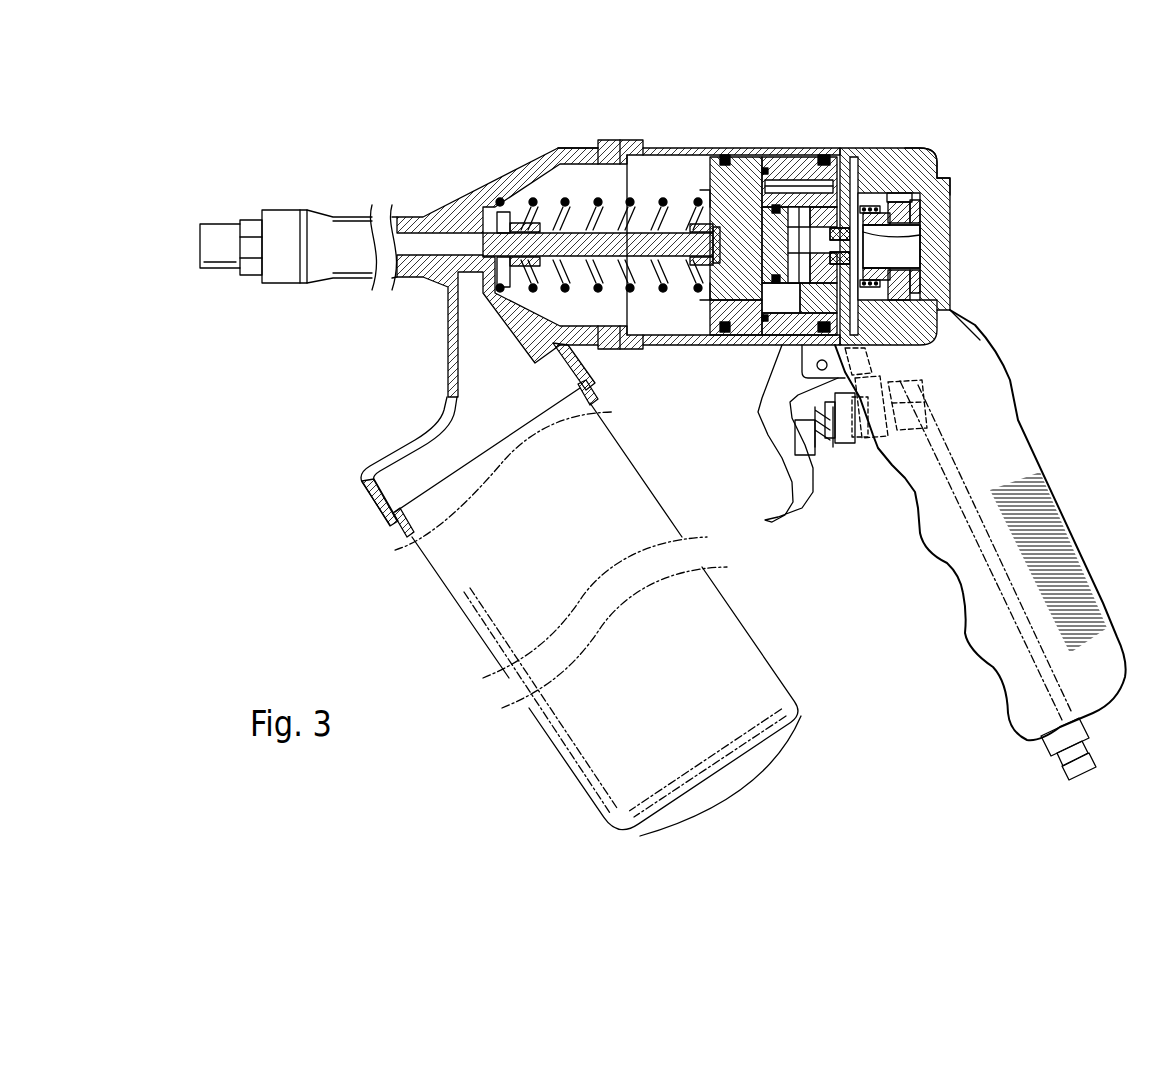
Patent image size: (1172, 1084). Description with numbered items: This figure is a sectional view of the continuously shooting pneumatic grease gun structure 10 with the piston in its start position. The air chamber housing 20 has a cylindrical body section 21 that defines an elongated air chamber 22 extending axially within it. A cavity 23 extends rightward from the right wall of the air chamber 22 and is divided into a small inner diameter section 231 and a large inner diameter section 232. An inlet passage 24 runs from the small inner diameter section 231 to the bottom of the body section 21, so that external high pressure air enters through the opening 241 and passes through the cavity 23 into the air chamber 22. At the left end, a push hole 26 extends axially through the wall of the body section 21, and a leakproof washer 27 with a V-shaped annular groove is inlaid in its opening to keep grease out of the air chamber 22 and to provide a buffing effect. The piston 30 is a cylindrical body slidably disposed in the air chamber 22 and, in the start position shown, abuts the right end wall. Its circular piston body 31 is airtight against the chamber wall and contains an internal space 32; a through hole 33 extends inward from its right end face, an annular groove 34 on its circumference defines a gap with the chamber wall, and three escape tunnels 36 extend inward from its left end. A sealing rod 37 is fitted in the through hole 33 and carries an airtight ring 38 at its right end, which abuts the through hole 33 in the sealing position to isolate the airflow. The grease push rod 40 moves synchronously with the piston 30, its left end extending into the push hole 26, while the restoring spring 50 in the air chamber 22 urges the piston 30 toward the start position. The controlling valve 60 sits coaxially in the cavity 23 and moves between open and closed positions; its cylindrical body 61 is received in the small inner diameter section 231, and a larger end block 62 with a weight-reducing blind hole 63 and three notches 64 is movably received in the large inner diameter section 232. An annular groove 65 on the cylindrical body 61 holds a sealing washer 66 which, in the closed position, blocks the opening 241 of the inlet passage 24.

The continuously shooting pneumatic grease gun structure 10 is at (203, 605).
The air chamber housing 20 is at (536, 137).
The cylindrical body section 21 is at (628, 150).
The air chamber 22 is at (686, 172).
The cavity 23 is at (873, 207).
The small inner diameter section 231 is at (927, 173).
The large inner diameter section 232 is at (930, 150).
The inlet passage 24 is at (905, 345).
The opening 241 is at (905, 330).
The push hole 26 is at (403, 243).
The leakproof washer 27 is at (510, 212).
The piston 30 is at (694, 165).
The piston body 31 is at (814, 165).
The internal space 32 is at (768, 185).
The through hole 33 is at (853, 212).
The annular groove 34 is at (790, 200).
The escape tunnels 36 is at (795, 325).
The sealing rod 37 is at (745, 308).
The airtight ring 38 is at (910, 282).
The grease push rod 40 is at (590, 238).
The restoring spring 50 is at (662, 198).
The controlling valve 60 is at (922, 216).
The cylindrical body 61 is at (920, 202).
The end block 62 is at (942, 180).
The blind hole 63 is at (900, 262).
The notches 64 is at (930, 300).
The annular groove 65 is at (902, 240).
The sealing washer 66 is at (893, 197).